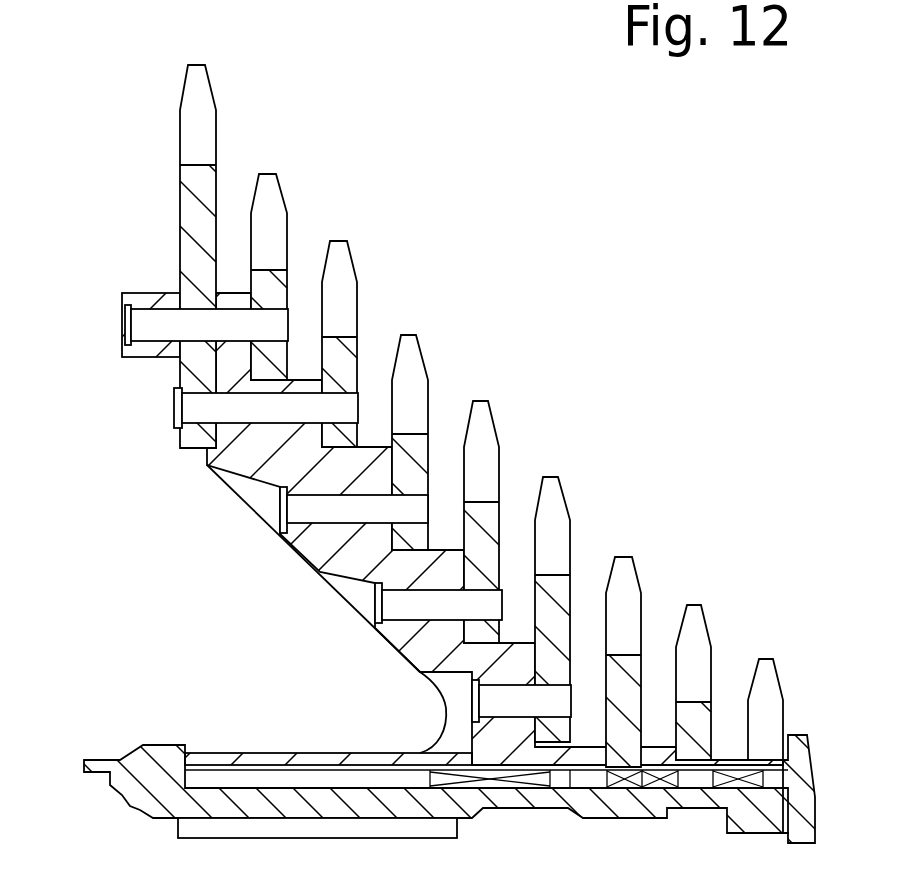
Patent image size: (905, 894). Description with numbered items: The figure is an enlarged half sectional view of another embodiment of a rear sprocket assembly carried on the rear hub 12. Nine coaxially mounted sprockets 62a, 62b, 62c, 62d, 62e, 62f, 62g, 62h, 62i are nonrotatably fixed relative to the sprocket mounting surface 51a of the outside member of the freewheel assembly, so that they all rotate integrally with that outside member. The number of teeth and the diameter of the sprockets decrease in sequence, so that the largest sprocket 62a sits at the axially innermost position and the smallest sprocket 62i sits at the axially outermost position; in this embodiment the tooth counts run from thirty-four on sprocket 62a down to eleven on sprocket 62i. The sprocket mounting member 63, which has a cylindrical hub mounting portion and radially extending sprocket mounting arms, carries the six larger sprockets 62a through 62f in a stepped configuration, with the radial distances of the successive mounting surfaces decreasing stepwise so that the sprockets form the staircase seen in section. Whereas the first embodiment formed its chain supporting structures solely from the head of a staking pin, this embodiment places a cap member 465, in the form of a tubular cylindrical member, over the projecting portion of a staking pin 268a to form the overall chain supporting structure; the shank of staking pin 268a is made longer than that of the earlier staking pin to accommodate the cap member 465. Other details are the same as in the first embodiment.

The rear hub 12 is at (98, 729).
The sprocket mounting surface 51a is at (277, 764).
The sprocket mounting member 63 is at (253, 455).
The cap member 465 is at (138, 293).
The staking pin 268a is at (263, 328).
The sprocket 62a is at (203, 98).
The sprocket 62b is at (270, 192).
The sprocket 62c is at (338, 258).
The sprocket 62d is at (410, 355).
The sprocket 62e is at (482, 420).
The sprocket 62f is at (553, 493).
The sprocket 62g is at (623, 575).
The sprocket 62h is at (700, 633).
The sprocket 62i is at (772, 692).